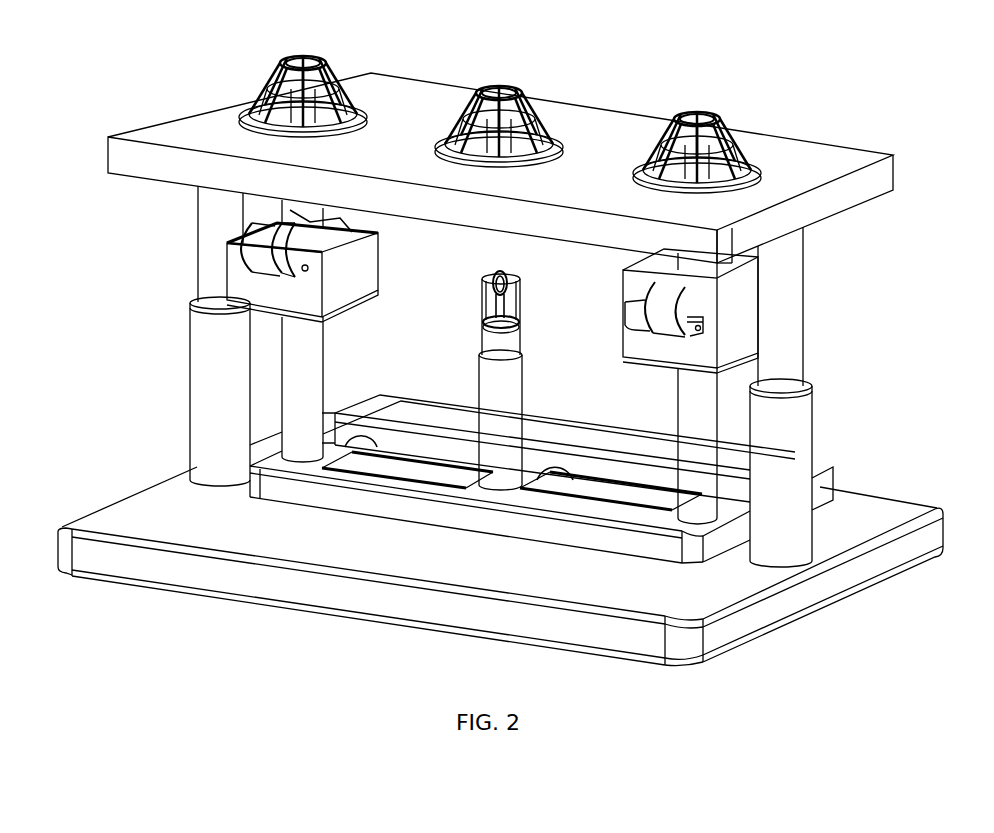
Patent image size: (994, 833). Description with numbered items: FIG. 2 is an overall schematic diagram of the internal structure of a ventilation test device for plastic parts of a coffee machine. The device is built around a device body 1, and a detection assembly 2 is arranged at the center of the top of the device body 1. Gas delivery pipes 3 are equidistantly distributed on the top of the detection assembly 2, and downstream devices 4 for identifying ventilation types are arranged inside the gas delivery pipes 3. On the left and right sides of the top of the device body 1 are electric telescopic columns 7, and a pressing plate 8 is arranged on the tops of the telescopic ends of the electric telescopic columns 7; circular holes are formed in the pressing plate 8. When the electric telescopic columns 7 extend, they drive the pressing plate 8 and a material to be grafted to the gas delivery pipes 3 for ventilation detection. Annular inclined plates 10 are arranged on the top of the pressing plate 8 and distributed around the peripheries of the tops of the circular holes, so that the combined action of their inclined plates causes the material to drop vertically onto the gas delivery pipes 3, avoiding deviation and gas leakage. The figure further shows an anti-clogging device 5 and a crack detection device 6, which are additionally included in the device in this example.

The device body 1 is at (228, 537).
The detection assembly 2 is at (362, 512).
The gas delivery pipes 3 is at (487, 490).
The downstream devices 4 is at (500, 272).
The anti-clogging device 5 is at (522, 318).
The crack detection device 6 is at (242, 282).
The electric telescopic columns 7 is at (222, 212).
The pressing plate 8 is at (202, 127).
The annular inclined plates 10 is at (245, 103).